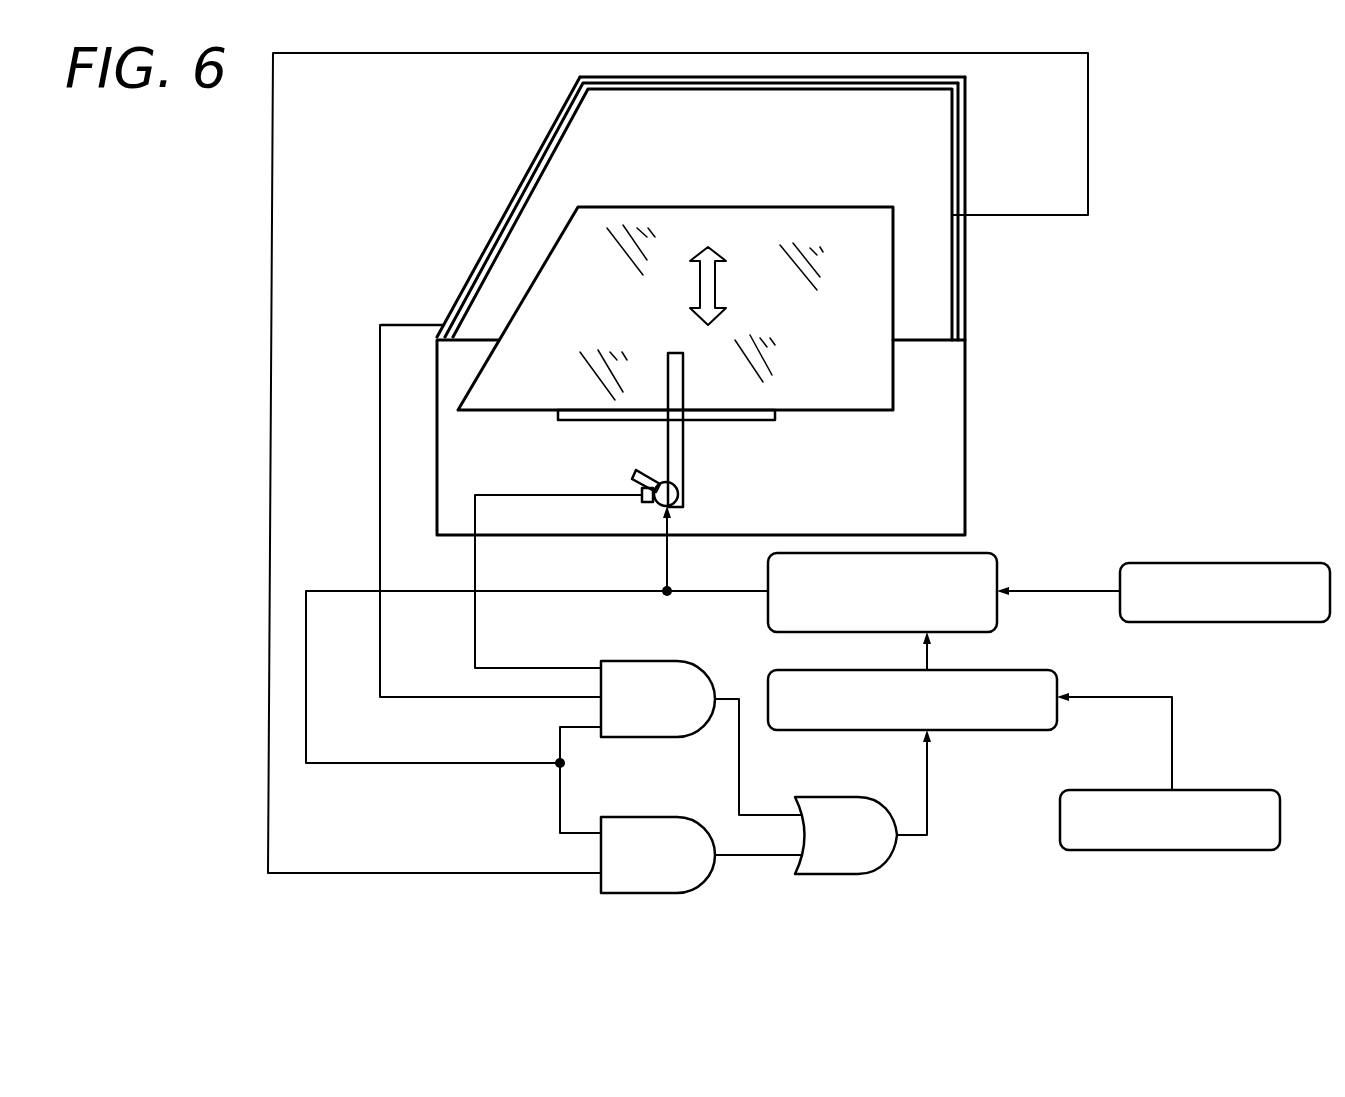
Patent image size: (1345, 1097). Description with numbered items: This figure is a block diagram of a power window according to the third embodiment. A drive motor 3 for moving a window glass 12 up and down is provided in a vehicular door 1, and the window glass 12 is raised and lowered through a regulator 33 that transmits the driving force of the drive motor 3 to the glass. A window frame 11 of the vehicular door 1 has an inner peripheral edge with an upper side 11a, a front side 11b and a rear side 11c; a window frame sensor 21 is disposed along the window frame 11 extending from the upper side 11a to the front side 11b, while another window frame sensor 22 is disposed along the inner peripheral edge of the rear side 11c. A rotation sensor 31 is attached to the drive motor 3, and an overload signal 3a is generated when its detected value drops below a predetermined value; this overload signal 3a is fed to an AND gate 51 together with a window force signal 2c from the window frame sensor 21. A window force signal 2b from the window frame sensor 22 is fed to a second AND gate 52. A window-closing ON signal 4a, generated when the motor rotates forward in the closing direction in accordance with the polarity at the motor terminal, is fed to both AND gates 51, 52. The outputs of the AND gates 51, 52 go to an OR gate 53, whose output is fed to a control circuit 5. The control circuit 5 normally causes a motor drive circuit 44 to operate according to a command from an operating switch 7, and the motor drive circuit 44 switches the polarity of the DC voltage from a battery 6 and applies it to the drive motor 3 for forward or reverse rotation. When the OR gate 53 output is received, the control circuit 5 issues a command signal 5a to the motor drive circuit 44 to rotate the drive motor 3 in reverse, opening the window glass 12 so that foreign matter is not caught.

The vehicular door 1 is at (965, 458).
The window frame 11 is at (740, 201).
The upper side 11a is at (728, 92).
The front side 11b is at (550, 140).
The rear side 11c is at (958, 185).
The window glass 12 is at (893, 302).
The window frame sensor 21 is at (500, 232).
The window frame sensor 22 is at (965, 128).
The window force signal 2b is at (1088, 130).
The window force signal 2c is at (380, 562).
The drive motor 3 is at (656, 500).
The rotation sensor 31 is at (642, 502).
The regulator 33 is at (683, 450).
The overload signal 3a is at (475, 562).
The window-closing ON signal 4a is at (400, 764).
The motor drive circuit 44 is at (990, 560).
The control circuit 5 is at (985, 730).
The command signal 5a is at (930, 650).
The AND gate 51 is at (670, 661).
The AND gate 52 is at (662, 817).
The OR gate 53 is at (832, 797).
The battery 6 is at (1300, 563).
The operating switch 7 is at (1243, 790).